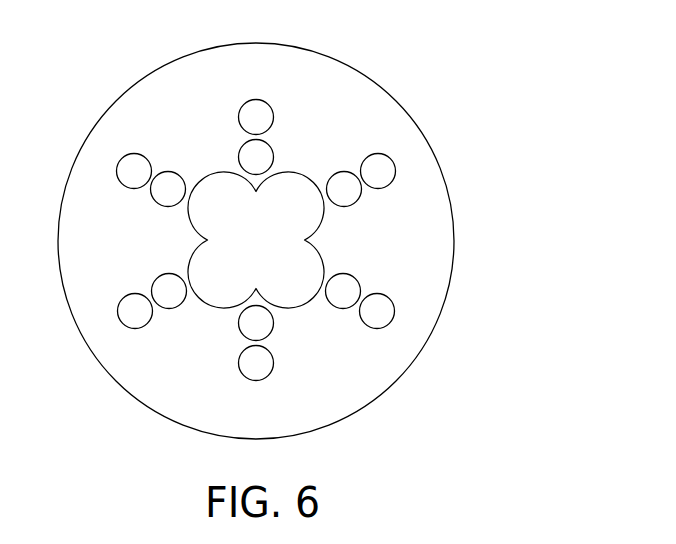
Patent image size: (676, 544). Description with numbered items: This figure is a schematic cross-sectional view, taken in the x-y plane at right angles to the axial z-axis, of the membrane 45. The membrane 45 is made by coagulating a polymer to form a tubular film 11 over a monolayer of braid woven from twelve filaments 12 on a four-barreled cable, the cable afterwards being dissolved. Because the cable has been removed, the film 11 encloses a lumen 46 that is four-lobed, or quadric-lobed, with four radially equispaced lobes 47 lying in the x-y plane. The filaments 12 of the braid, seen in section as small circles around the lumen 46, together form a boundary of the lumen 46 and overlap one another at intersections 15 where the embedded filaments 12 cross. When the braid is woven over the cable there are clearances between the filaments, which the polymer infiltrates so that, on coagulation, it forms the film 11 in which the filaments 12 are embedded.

The tubular film 11 is at (455, 215).
The filaments 12 is at (345, 172).
The intersections 15 is at (256, 255).
The membrane 45 is at (312, 241).
The lumen 46 is at (258, 242).
The lobes 47 is at (216, 174).